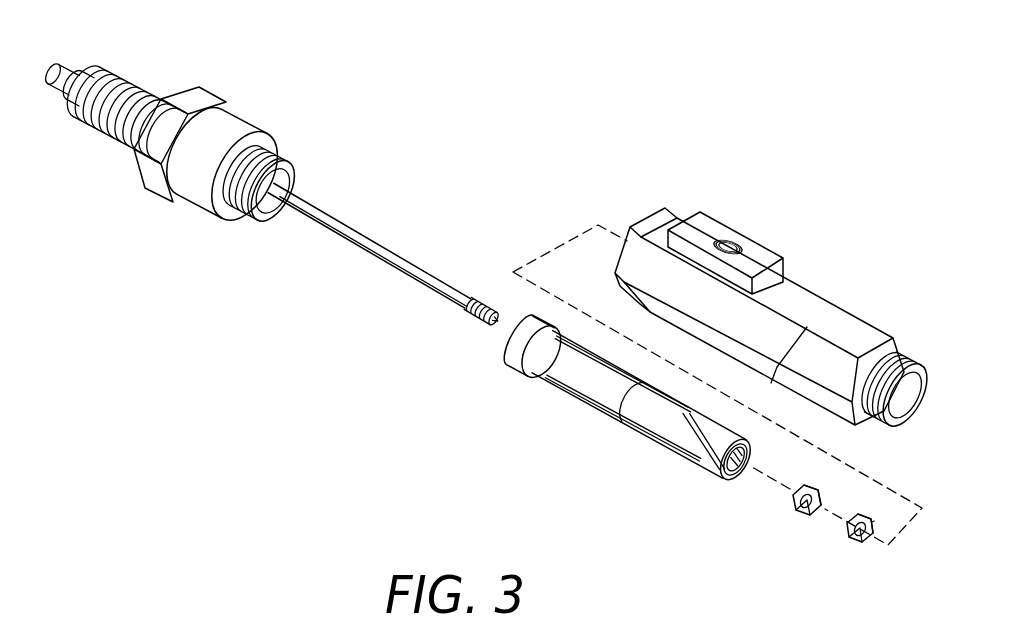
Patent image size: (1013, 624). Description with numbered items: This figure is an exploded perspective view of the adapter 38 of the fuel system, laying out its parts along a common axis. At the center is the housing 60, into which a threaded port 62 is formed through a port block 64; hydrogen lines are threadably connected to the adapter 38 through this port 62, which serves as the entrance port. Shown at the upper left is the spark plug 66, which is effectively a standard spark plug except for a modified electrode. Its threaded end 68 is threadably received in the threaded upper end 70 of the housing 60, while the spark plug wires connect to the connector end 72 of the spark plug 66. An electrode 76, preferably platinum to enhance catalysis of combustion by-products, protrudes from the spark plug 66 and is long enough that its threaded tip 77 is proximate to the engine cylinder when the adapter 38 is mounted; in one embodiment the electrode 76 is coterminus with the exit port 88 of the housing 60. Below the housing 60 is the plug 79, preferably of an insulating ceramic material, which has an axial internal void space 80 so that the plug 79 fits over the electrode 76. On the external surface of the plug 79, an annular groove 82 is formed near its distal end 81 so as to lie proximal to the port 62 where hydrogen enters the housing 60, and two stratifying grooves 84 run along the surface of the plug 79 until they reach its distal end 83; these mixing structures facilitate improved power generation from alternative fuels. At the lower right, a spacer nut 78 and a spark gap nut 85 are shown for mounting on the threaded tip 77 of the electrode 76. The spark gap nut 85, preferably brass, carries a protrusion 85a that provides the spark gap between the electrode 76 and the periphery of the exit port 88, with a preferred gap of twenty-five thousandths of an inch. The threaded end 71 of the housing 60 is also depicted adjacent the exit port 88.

The adapter 38 is at (443, 191).
The housing 60 is at (812, 300).
The threaded port 62 is at (735, 242).
The port block 64 is at (771, 255).
The spark plug 66 is at (163, 93).
The threaded end 68 is at (281, 160).
The threaded upper end 70 is at (632, 224).
The threaded end 71 is at (908, 364).
The connector end 72 is at (56, 62).
The electrode 76 is at (342, 236).
The threaded tip 77 is at (497, 307).
The spacer nut 78 is at (799, 516).
The plug 79 is at (590, 388).
The axial internal void space 80 is at (737, 466).
The distal end 81 is at (511, 344).
The annular groove 82 is at (523, 372).
The distal end 83 is at (738, 472).
The stratifying grooves 84 is at (688, 418).
The spark gap nut 85 is at (856, 540).
The protrusion 85a is at (880, 498).
The exit port 88 is at (902, 397).